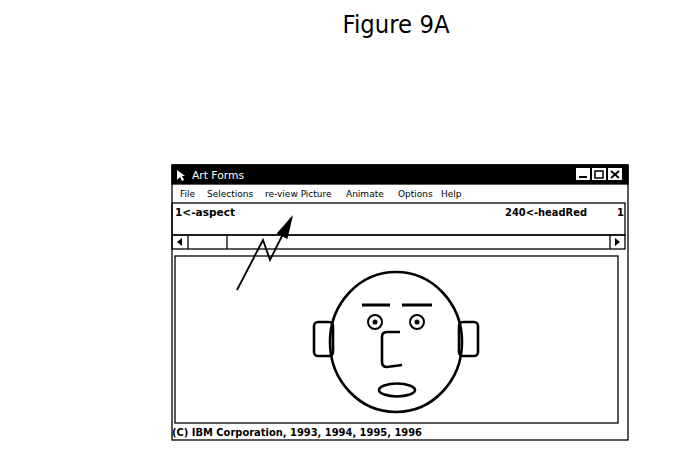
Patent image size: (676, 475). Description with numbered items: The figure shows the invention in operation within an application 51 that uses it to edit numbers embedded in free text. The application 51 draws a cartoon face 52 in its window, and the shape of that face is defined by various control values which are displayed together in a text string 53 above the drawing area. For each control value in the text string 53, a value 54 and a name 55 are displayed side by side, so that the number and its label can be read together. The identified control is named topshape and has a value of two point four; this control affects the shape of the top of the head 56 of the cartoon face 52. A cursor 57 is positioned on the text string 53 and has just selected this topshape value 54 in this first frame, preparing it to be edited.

The application 51 is at (172, 341).
The cartoon face 52 is at (428, 290).
The text string 53 is at (386, 217).
The value 54 is at (284, 211).
The name 55 is at (337, 205).
The top of the head 56 is at (449, 283).
The cursor 57 is at (250, 253).